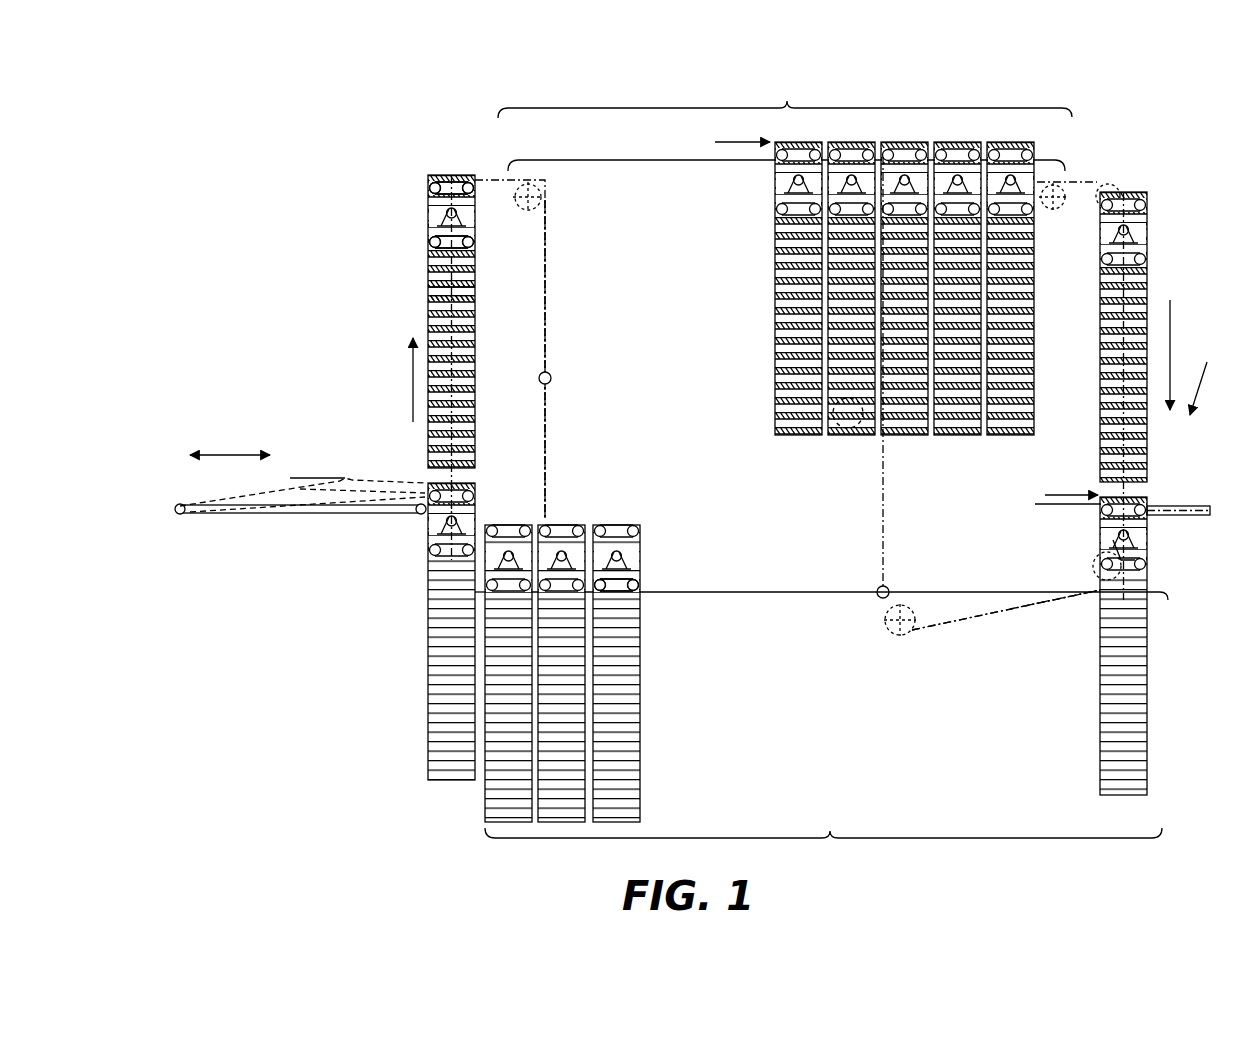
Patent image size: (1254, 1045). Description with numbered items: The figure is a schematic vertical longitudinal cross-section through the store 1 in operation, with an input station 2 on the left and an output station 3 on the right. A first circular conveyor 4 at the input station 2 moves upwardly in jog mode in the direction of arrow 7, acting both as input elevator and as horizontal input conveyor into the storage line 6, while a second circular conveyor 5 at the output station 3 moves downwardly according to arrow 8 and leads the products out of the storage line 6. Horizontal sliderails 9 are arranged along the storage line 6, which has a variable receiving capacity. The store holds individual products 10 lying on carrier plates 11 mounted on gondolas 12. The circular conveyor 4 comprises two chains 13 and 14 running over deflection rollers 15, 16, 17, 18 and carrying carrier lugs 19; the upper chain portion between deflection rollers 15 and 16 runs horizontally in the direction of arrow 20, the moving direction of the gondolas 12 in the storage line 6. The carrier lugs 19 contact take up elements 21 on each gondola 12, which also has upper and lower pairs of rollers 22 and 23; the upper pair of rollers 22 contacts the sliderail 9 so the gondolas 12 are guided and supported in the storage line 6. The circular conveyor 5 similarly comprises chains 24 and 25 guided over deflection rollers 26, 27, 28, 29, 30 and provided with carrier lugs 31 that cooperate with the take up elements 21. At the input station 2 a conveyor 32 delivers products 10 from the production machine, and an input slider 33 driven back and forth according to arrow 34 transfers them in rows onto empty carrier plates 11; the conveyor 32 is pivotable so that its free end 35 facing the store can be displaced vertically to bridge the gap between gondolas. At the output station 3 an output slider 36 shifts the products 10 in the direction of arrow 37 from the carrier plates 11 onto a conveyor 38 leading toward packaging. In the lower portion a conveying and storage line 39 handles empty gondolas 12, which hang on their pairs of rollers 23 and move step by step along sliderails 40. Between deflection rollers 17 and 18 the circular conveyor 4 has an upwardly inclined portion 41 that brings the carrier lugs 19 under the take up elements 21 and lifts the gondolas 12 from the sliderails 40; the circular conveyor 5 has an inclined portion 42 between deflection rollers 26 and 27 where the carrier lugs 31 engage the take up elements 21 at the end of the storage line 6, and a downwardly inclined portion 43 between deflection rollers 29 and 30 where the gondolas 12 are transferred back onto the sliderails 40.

The store 1 is at (1020, 100).
The input station 2 is at (330, 412).
The output station 3 is at (1198, 374).
The first circular conveyor 4 is at (490, 180).
The second circular conveyor 5 is at (1098, 184).
The storage line 6 is at (785, 95).
The arrow 7 is at (392, 380).
The arrow 8 is at (1190, 344).
The horizontal sliderail 9 is at (705, 165).
The individual product 10 is at (430, 275).
The carrier plate 11 is at (430, 302).
The gondola 12 is at (420, 147).
The chain 13 is at (549, 292).
The chain 14 is at (594, 360).
The deflection roller 15 is at (452, 180).
The deflection roller 16 is at (523, 212).
The deflection roller 17 is at (518, 548).
The deflection roller 18 is at (428, 540).
The carrier lug 19 is at (552, 378).
The arrow 20 is at (765, 140).
The take up element 21 is at (430, 237).
The pair of rollers 22 is at (435, 213).
The pair of rollers 23 is at (640, 590).
The chain 24 is at (985, 628).
The chain 25 is at (1006, 631).
The deflection roller 26 is at (870, 258).
The deflection roller 27 is at (1075, 182).
The deflection roller 28 is at (1115, 185).
The deflection roller 29 is at (1095, 572).
The deflection roller 30 is at (895, 628).
The carrier lug 31 is at (870, 595).
The conveyor 32 is at (290, 518).
The input slider 33 is at (310, 478).
The arrow 34 is at (228, 452).
The free end 35 is at (415, 516).
The output slider 36 is at (1065, 505).
The arrow 37 is at (1070, 492).
The conveyor 38 is at (1185, 515).
The conveying and storage line 39 is at (823, 854).
The sliderail 40 is at (750, 595).
The inclined portion 41 is at (490, 605).
The inclined portion 42 is at (968, 210).
The inclined portion 43 is at (1058, 604).